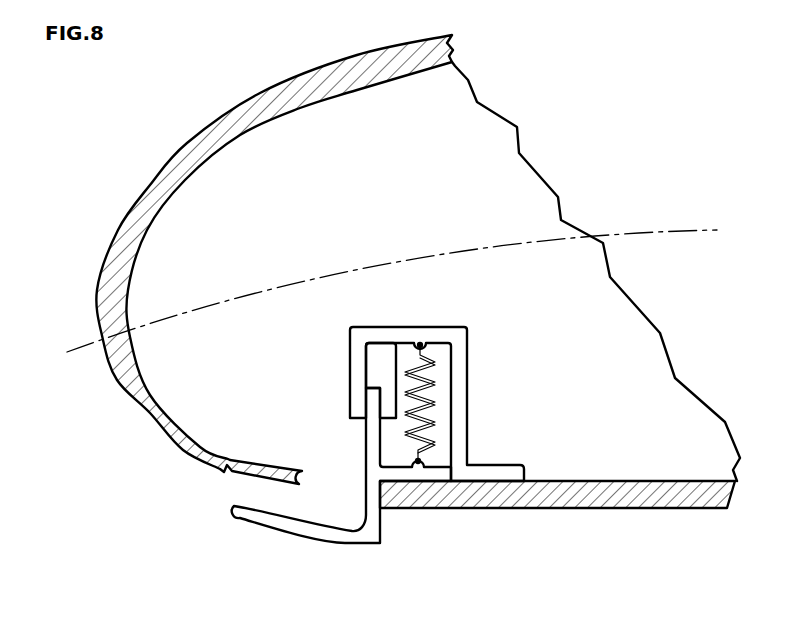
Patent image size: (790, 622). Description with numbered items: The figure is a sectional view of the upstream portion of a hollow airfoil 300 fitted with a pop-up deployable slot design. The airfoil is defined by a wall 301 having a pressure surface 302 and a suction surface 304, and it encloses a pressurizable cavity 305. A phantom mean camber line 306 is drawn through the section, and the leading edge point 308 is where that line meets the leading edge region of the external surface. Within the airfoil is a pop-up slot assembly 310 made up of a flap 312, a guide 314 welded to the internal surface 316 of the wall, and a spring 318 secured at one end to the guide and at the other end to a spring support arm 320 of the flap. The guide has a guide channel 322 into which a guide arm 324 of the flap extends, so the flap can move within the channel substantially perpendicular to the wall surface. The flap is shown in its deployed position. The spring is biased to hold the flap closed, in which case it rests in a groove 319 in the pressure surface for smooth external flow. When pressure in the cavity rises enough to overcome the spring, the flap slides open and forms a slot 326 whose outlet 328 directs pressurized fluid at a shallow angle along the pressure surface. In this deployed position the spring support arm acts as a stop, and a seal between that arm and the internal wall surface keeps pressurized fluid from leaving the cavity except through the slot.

The hollow airfoil 300 is at (114, 109).
The wall 301 is at (518, 497).
The pressure surface 302 is at (630, 509).
The suction surface 304 is at (355, 53).
The pressurizable cavity 305 is at (328, 204).
The mean camber line 306 is at (400, 258).
The leading edge point 308 is at (100, 343).
The pop-up slot assembly 310 is at (338, 369).
The flap 312 is at (343, 552).
The guide 314 is at (457, 335).
The internal surface 316 is at (628, 481).
The spring 318 is at (427, 418).
The groove 319 is at (228, 471).
The spring support arm 320 is at (400, 474).
The guide channel 322 is at (373, 355).
The guide arm 324 is at (372, 437).
The slot 326 is at (277, 500).
The outlet 328 is at (232, 493).